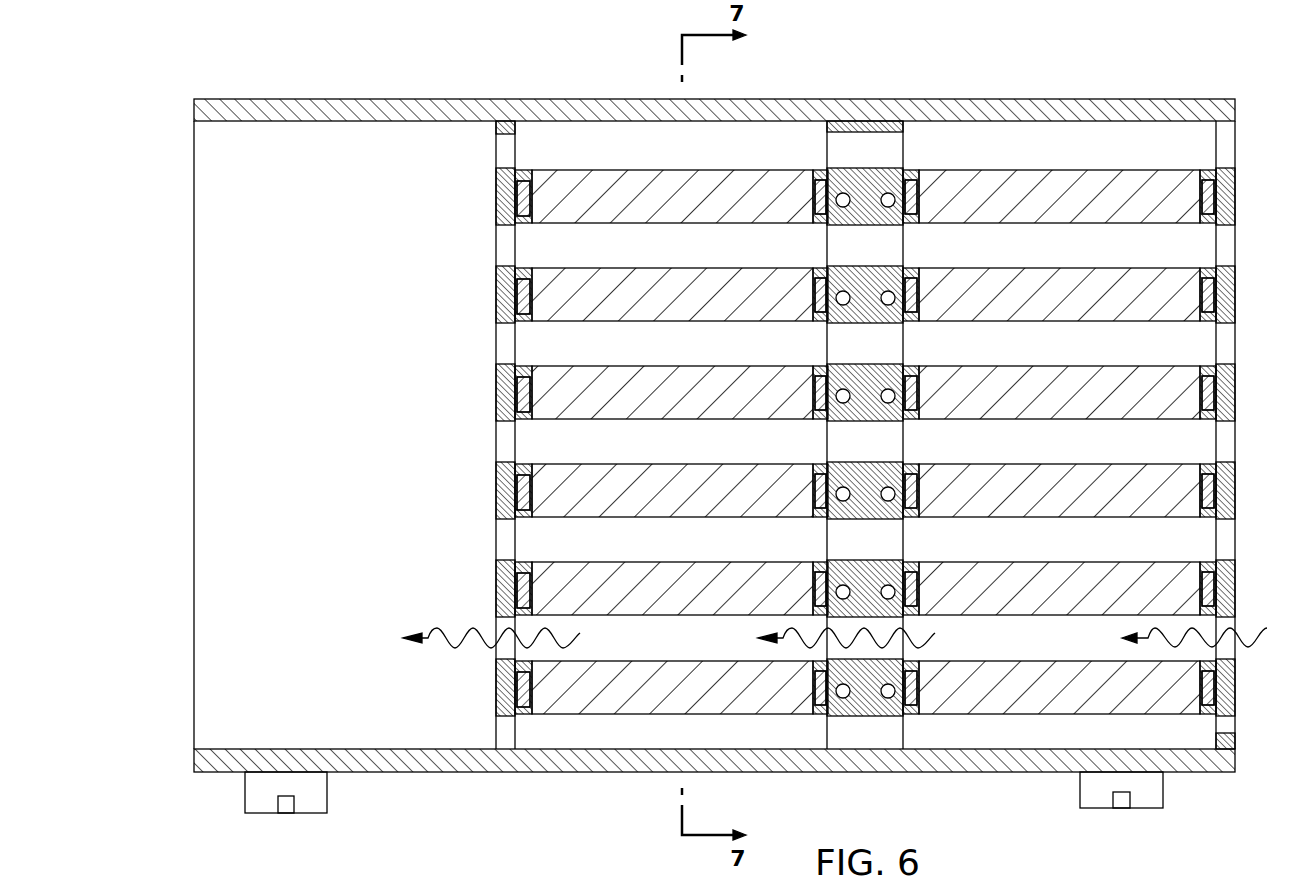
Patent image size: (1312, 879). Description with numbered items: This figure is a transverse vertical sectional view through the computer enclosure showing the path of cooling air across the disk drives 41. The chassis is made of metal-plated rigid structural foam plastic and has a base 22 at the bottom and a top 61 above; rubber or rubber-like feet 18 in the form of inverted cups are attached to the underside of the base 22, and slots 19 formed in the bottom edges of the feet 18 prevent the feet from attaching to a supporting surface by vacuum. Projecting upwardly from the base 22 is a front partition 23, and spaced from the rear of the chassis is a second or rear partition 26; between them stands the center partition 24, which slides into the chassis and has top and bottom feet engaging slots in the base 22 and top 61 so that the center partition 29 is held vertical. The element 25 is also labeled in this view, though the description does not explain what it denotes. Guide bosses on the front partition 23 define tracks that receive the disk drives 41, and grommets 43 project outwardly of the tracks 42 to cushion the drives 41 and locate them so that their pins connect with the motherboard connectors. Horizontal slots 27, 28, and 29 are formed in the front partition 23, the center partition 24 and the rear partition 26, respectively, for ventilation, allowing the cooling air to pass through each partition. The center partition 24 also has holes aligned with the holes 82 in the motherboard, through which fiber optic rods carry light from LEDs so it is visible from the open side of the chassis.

The top 61 is at (777, 112).
The base 22 is at (563, 768).
The feet 18 is at (327, 792).
The slots 19 is at (288, 807).
The center partition 29 is at (507, 347).
The rear partition 26 is at (497, 202).
The horizontal slots 28 is at (910, 349).
The central manifold header 25 is at (880, 122).
The center partition 24 is at (893, 168).
The holes 82 is at (888, 394).
The horizontal slots 27 is at (1228, 342).
The front partition 23 is at (1232, 390).
The disk drives 41 is at (1055, 188).
The grommets 43 is at (912, 197).
The tracks 42 is at (1210, 265).